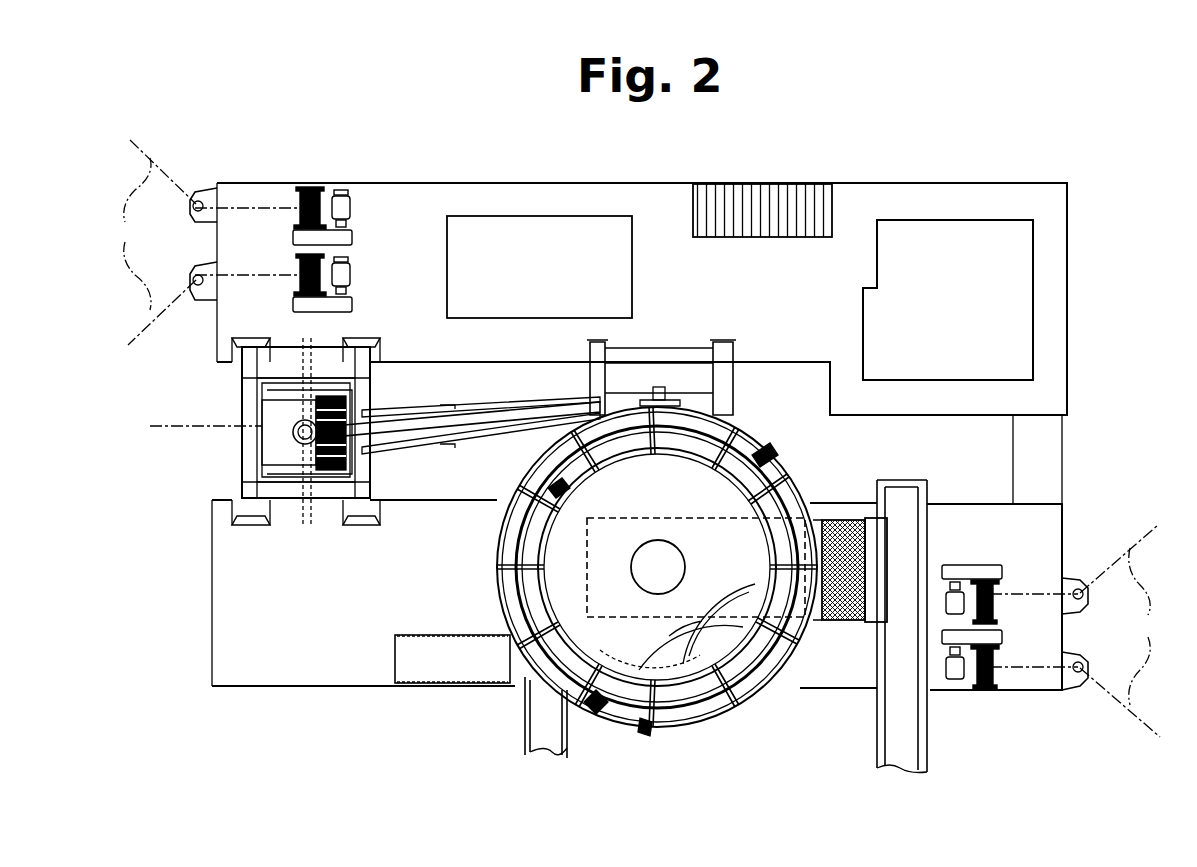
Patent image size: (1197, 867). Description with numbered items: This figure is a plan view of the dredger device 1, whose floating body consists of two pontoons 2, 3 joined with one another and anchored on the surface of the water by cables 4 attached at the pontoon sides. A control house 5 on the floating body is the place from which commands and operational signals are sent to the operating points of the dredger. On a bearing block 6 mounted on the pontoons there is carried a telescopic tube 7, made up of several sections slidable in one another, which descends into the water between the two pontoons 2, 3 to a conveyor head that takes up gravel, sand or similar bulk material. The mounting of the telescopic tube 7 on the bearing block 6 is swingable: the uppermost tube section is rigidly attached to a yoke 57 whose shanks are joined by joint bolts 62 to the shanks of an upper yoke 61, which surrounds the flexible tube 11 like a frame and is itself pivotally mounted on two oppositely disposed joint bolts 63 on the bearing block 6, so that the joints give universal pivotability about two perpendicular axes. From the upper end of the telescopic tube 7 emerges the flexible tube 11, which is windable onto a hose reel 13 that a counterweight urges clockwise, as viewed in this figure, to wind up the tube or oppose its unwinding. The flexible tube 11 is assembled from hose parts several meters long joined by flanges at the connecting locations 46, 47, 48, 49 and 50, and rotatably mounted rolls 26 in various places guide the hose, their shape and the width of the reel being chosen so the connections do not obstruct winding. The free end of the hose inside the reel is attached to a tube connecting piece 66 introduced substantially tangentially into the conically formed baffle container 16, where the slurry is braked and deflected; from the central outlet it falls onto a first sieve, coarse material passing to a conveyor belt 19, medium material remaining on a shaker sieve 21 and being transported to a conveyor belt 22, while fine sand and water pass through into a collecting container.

The dredger device 1 is at (780, 150).
The pontoon 2 is at (417, 190).
The pontoon 3 is at (352, 657).
The cables 4 is at (636, 438).
The control house 5 is at (862, 306).
The bearing block 6 is at (262, 514).
The telescopic tube 7 is at (268, 452).
The flexible tube 11 is at (447, 420).
The hose reel 13 is at (765, 433).
The baffle container 16 is at (668, 499).
The conveyor belt 19 is at (536, 717).
The shaker sieve 21 is at (842, 622).
The conveyor belt 22 is at (903, 735).
The rolls 26 is at (470, 447).
The connecting location 46 is at (295, 428).
The connecting location 47 is at (778, 461).
The connecting location 48 is at (648, 724).
The connecting location 49 is at (727, 423).
The connecting location 50 is at (603, 702).
The yoke 57 is at (290, 458).
The upper yoke 61 is at (275, 485).
The joint bolts 62 is at (191, 424).
The joint bolts 63 is at (303, 505).
The tube connecting piece 66 is at (566, 488).